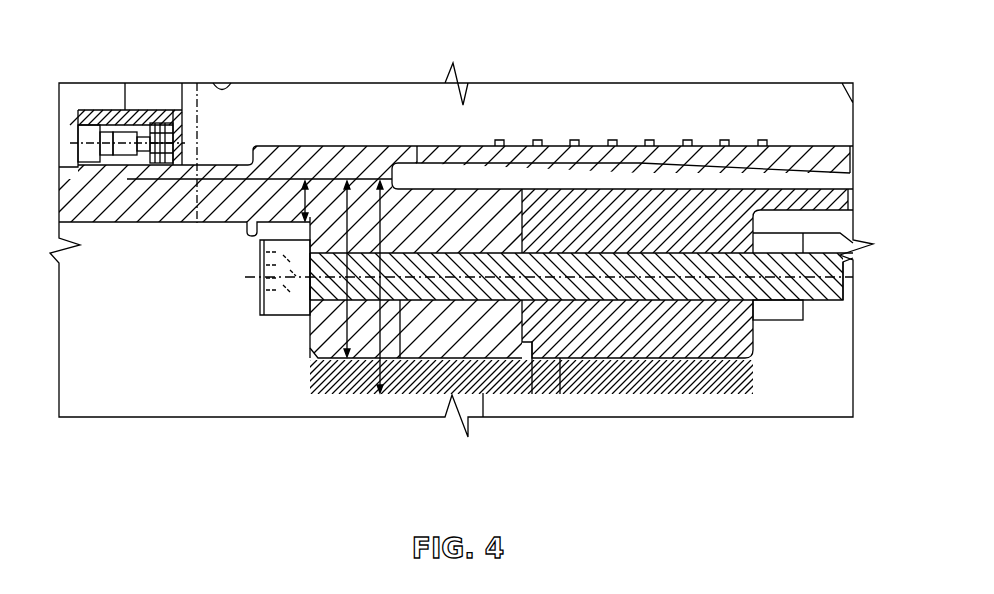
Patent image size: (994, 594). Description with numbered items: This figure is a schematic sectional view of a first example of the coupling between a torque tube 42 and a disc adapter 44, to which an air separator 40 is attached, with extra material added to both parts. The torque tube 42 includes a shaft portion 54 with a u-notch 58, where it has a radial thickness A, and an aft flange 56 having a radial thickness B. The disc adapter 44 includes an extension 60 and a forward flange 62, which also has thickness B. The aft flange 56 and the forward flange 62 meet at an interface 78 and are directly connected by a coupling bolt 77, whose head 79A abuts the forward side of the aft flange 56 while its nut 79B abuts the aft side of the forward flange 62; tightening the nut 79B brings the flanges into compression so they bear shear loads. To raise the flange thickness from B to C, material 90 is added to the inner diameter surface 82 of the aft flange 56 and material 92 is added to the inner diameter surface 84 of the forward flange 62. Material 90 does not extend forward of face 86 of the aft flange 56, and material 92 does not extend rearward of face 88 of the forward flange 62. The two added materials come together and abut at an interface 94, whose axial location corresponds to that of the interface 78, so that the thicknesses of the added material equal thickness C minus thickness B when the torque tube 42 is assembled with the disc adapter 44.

The air separator 40 is at (632, 140).
The torque tube 42 is at (108, 212).
The disc adapter 44 is at (842, 183).
The shaft portion 54 is at (212, 225).
The aft flange 56 is at (407, 345).
The u-notch 58 is at (307, 210).
The extension 60 is at (822, 199).
The forward flange 62 is at (598, 348).
The coupling bolt 77 is at (682, 290).
The interface 78 is at (538, 190).
The head 79A is at (266, 319).
The nut 79B is at (789, 306).
The inner diameter surface 82 is at (457, 365).
The inner diameter surface 84 is at (657, 362).
The face 86 is at (307, 344).
The face 88 is at (755, 338).
The material 90 is at (510, 378).
The material 92 is at (585, 392).
The interface 94 is at (535, 392).